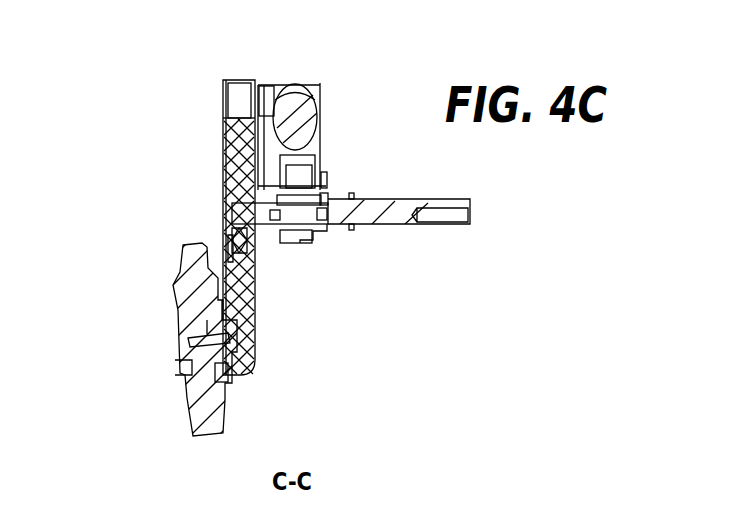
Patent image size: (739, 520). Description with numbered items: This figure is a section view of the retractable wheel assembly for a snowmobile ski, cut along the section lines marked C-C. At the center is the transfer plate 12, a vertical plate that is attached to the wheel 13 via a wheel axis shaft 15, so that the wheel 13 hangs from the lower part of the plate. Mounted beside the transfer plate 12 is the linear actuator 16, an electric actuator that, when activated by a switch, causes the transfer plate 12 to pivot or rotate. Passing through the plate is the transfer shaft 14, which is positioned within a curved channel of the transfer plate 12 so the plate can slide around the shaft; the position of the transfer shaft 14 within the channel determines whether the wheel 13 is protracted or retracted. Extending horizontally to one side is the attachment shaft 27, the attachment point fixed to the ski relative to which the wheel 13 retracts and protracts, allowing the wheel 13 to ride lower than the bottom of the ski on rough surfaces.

The transfer plate 12 is at (236, 100).
The wheel 13 is at (185, 267).
The transfer shaft 14 is at (257, 212).
The wheel axis shaft 15 is at (215, 341).
The linear actuator 16 is at (307, 118).
The attachment shaft 27 is at (398, 210).